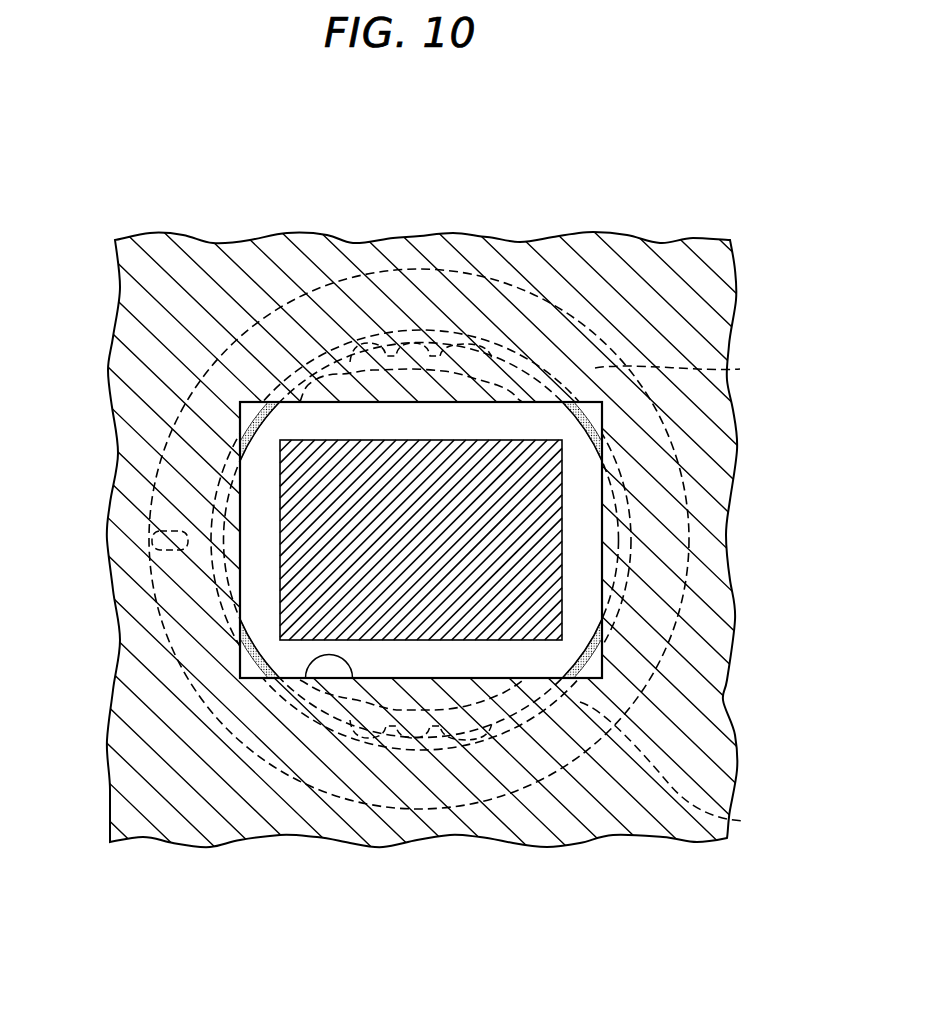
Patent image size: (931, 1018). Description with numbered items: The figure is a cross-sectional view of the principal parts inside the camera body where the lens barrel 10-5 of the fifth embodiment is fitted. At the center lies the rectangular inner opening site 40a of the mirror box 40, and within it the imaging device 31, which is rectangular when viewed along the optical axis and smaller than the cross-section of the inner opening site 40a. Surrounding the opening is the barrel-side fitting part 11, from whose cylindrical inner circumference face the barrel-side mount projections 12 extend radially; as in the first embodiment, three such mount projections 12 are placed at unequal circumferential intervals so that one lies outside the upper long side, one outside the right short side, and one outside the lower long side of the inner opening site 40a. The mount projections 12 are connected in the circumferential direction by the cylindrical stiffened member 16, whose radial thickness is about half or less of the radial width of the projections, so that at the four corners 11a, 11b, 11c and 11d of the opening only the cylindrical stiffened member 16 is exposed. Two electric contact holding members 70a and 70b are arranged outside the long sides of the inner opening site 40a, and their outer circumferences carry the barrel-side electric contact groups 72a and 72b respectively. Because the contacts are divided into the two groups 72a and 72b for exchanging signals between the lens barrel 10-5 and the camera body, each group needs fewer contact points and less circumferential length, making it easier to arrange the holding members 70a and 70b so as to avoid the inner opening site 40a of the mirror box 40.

The lens barrel 10-5 is at (594, 368).
The barrel-side fitting part 11 is at (520, 293).
The corner of the opening site 11a is at (241, 421).
The corner of the opening site 11b is at (241, 650).
The corner of the opening site 11c is at (605, 647).
The corner of the opening site 11d is at (604, 410).
The barrel-side mount projection 12 is at (318, 322).
The cylindrical stiffened member 16 is at (213, 578).
The imaging device 31 is at (522, 512).
The mirror box 40 is at (218, 282).
The inner opening site 40a is at (325, 660).
The electric contact holding member 70a is at (617, 347).
The electric contact holding member 70b is at (548, 778).
The barrel-side electric contact group 72a is at (494, 340).
The barrel-side electric contact group 72b is at (493, 750).